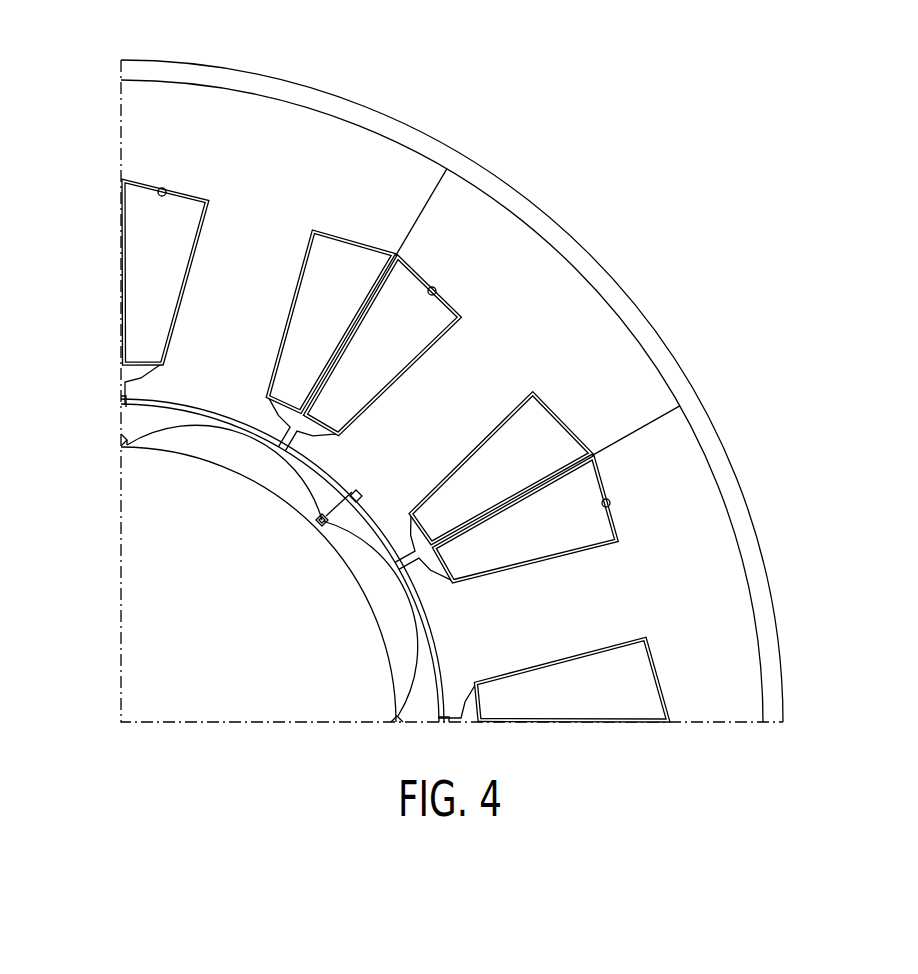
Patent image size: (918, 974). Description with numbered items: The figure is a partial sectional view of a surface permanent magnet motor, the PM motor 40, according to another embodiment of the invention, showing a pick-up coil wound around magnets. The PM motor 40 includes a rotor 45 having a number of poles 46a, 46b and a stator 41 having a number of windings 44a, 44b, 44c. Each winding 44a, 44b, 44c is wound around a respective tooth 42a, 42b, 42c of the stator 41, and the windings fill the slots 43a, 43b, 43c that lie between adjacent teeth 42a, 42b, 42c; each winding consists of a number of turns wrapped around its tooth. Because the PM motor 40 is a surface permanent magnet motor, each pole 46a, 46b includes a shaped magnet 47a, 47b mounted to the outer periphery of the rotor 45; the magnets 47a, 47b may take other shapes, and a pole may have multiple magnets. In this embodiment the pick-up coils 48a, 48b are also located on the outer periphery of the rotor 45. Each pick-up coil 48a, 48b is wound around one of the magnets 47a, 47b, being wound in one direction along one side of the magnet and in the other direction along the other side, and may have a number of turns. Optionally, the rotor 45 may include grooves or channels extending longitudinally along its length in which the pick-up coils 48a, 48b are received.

The PM motor 40 is at (606, 199).
The stator 41 is at (263, 130).
The tooth 42a is at (201, 364).
The tooth 42b is at (379, 459).
The tooth 42c is at (476, 637).
The slot 43a is at (164, 194).
The slot 43b is at (434, 289).
The slot 43c is at (611, 507).
The winding 44a is at (134, 257).
The winding 44b is at (369, 337).
The winding 44c is at (536, 527).
The rotor 45 is at (152, 692).
The pole 46a is at (186, 444).
The pole 46b is at (398, 632).
The magnet 47a is at (209, 459).
The magnet 47b is at (381, 619).
The pick-up coil 48a is at (120, 438).
The pick-up coil 48b is at (360, 497).